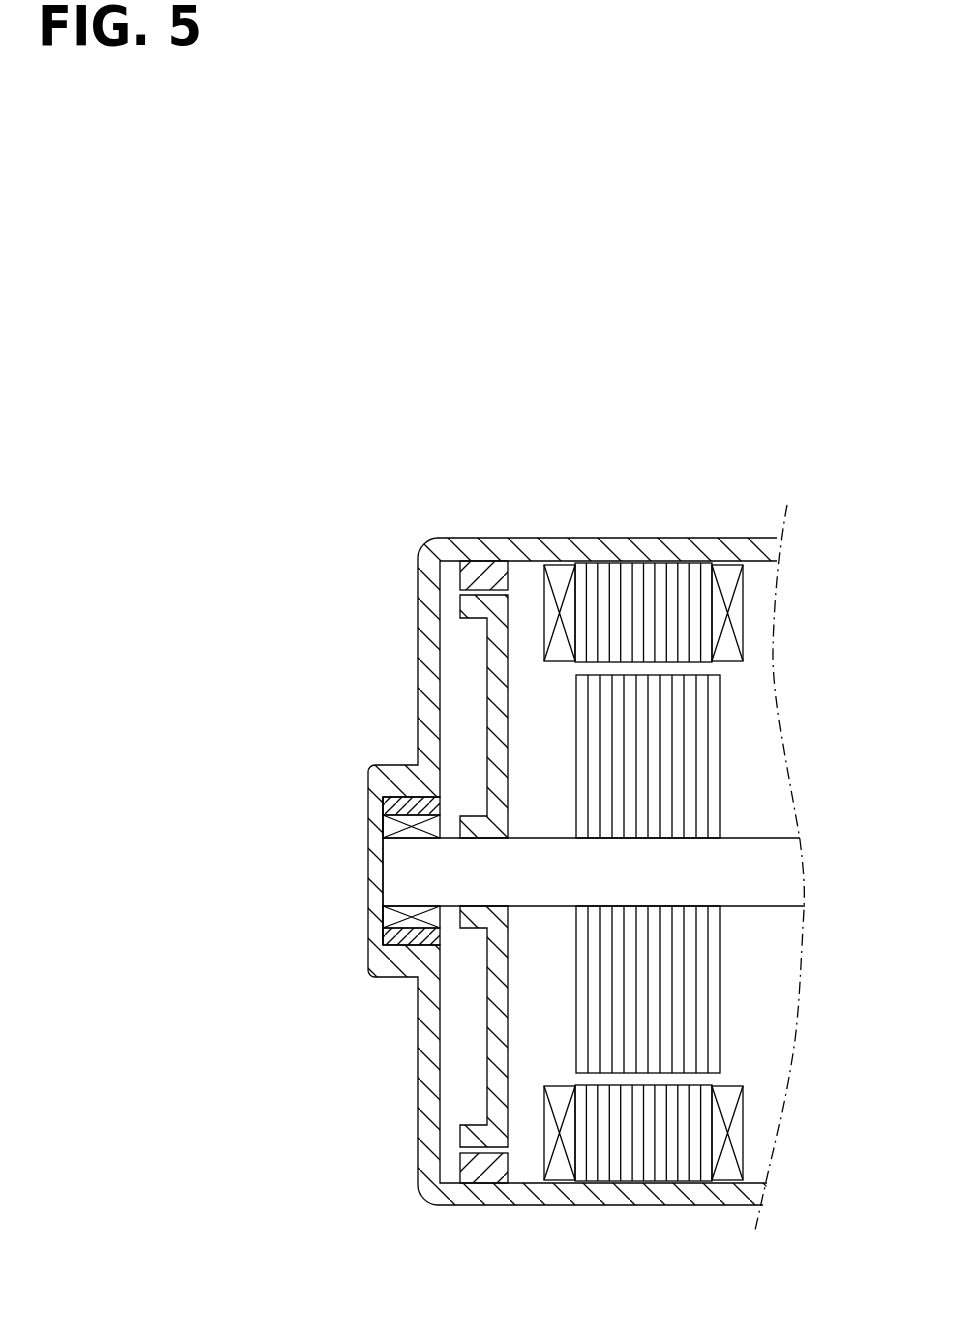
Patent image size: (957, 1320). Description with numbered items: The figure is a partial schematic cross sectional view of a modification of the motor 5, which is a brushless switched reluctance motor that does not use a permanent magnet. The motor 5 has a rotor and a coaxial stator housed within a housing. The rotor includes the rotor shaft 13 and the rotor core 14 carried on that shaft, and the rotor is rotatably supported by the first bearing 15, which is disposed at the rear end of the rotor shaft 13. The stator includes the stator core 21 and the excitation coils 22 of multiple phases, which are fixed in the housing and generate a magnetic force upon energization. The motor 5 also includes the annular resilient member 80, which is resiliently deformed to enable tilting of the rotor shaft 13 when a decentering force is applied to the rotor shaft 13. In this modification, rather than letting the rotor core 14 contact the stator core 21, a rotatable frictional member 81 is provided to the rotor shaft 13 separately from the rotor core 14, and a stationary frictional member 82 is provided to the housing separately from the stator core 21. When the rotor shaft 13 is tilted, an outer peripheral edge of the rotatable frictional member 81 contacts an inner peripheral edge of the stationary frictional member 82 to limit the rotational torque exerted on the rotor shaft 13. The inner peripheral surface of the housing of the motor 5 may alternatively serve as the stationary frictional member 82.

The motor 5 is at (416, 483).
The rotor shaft 13 is at (397, 876).
The rotor core 14 is at (690, 747).
The first bearing 15 is at (397, 830).
The stator core 21 is at (648, 578).
The excitation coils 22 is at (724, 582).
The annular resilient member 80 is at (385, 800).
The rotatable frictional member 81 is at (470, 606).
The stationary frictional member 82 is at (470, 580).